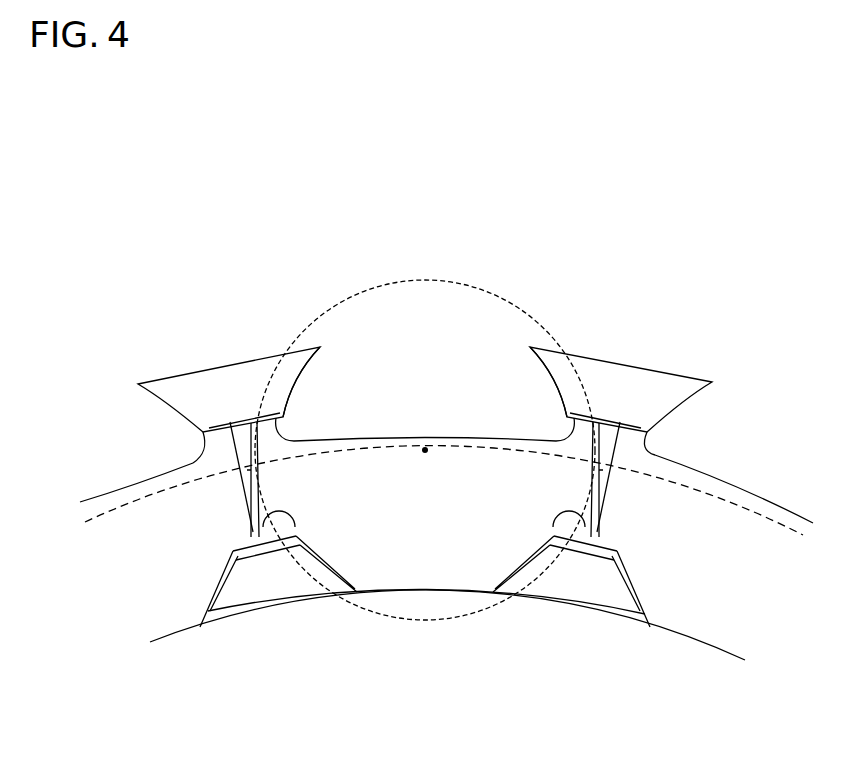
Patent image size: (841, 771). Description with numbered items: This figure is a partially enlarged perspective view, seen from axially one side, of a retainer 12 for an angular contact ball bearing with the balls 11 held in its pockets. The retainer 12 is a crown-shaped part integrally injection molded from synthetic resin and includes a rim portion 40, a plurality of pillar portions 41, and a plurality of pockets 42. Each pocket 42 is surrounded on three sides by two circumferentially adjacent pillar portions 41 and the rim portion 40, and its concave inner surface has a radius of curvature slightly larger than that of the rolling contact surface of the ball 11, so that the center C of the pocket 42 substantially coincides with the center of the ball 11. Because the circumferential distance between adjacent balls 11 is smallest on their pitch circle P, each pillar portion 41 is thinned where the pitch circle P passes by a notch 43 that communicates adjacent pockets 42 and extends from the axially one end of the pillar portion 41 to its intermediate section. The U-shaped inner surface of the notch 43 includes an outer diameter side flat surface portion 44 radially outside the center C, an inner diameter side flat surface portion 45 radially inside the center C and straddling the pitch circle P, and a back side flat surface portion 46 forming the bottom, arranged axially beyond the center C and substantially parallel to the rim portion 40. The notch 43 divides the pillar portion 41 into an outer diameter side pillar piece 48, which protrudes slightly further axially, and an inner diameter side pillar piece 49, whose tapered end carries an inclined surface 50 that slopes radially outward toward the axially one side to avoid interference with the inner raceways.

The ball 11 is at (503, 300).
The retainer for an angular contact ball bearing 12 is at (753, 537).
The rim portion 40 is at (436, 552).
The pillar portion 41 is at (211, 382).
The pocket 42 is at (555, 573).
The notch 43 is at (250, 503).
The outer diameter side flat surface portion 44 is at (212, 442).
The inner diameter side flat surface portion 45 is at (236, 545).
The back side flat surface portion 46 is at (250, 480).
The outer diameter side pillar piece 48 is at (188, 390).
The inner diameter side pillar piece 49 is at (253, 593).
The inclined surface 50 is at (275, 582).
The pitch circle P is at (728, 500).
The center of the pocket C is at (434, 463).